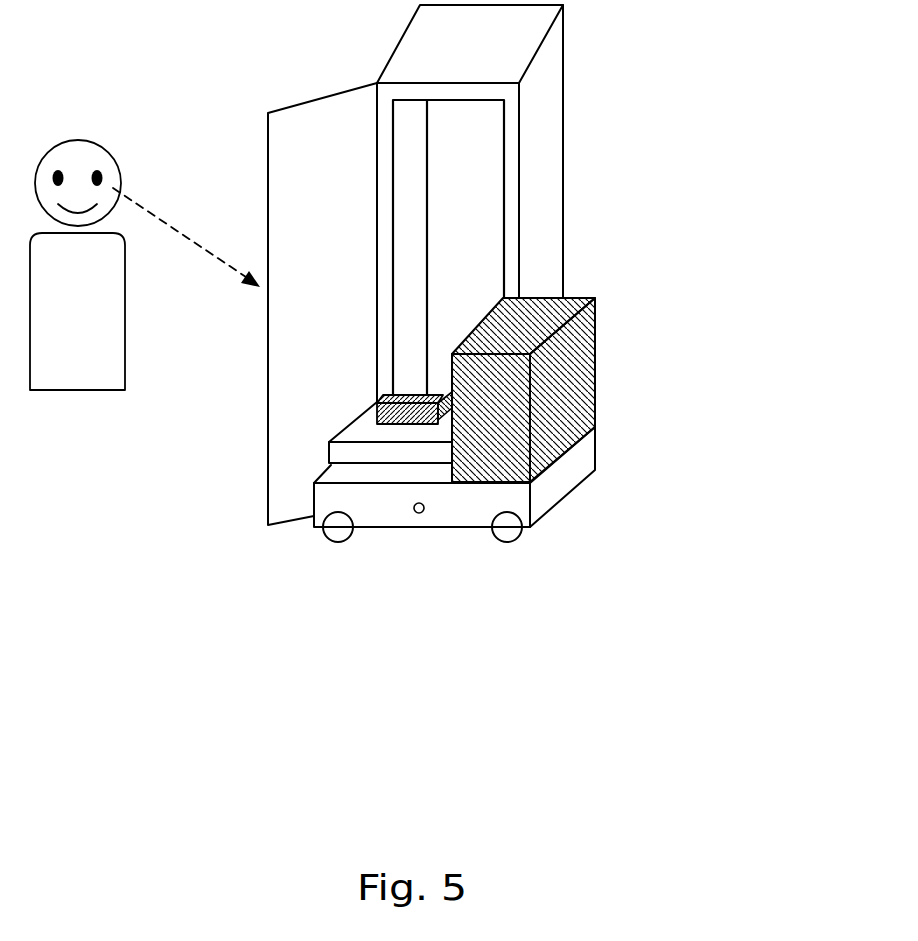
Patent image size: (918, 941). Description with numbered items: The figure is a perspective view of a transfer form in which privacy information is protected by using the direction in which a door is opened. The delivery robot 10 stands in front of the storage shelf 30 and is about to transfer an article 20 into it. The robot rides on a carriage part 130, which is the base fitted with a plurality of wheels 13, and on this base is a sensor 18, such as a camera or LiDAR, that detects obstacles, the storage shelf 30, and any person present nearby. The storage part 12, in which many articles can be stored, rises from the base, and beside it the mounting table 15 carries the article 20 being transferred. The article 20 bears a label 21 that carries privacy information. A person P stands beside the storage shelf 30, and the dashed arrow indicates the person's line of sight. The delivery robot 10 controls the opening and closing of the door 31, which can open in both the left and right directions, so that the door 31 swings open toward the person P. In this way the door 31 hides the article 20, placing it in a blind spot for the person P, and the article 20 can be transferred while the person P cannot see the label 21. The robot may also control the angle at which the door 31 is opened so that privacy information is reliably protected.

The delivery robot 10 is at (682, 307).
The storage part 12 is at (597, 375).
The wheels 13 is at (333, 535).
The mounting table 15 is at (338, 453).
The sensor 18 is at (418, 515).
The article 20 is at (378, 402).
The label 21 is at (451, 403).
The storage shelf 30 is at (555, 122).
The door 31 is at (326, 108).
The carriage part 130 is at (632, 468).
The person P is at (83, 148).